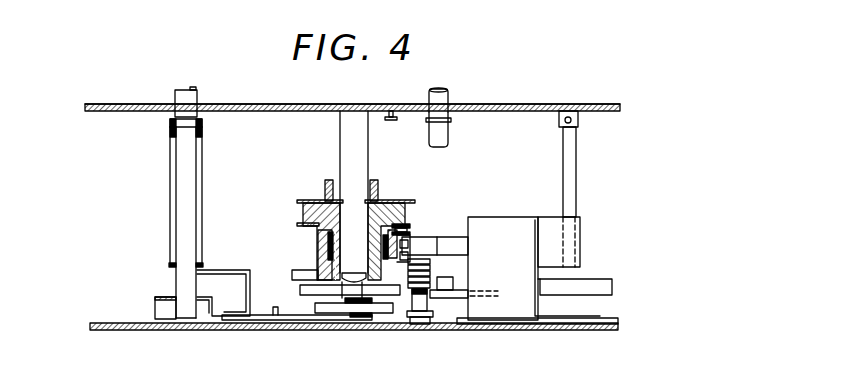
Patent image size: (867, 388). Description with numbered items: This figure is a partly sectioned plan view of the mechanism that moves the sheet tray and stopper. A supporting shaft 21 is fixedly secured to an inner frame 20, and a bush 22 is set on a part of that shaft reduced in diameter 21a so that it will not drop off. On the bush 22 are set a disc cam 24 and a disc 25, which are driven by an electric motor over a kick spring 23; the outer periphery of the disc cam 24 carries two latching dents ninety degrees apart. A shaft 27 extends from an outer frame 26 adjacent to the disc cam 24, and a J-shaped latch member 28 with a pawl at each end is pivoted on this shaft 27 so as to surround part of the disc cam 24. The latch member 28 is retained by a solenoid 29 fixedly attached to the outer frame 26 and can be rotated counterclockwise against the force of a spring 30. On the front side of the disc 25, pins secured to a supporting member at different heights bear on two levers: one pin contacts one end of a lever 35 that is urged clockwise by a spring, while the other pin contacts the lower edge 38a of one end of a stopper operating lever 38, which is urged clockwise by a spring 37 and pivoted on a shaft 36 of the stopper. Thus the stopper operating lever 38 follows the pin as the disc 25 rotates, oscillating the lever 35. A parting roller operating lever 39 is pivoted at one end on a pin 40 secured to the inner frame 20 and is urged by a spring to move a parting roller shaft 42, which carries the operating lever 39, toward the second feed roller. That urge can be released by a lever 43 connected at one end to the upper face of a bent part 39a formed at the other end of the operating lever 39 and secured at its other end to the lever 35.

The inner frame 20 is at (261, 112).
The supporting shaft 21 is at (345, 140).
The part reduced in diameter 21a is at (352, 212).
The bush 22 is at (378, 195).
The kick spring 23 is at (388, 235).
The disc cam 24 is at (320, 251).
The disc 25 is at (297, 272).
The outer frame 26 is at (246, 330).
The shaft 27 is at (425, 307).
The latch member 28 is at (425, 245).
The solenoid 29 is at (500, 228).
The spring 30 is at (452, 288).
The lever 35 is at (598, 284).
The shaft 36 is at (186, 191).
The spring 37 is at (232, 270).
The stopper operating lever 38 is at (268, 313).
The lower edge 38a is at (350, 308).
The parting roller operating lever 39 is at (522, 112).
The bent part 39a is at (578, 121).
The pin 40 is at (392, 121).
The parting roller shaft 42 is at (449, 140).
The lever 43 is at (575, 197).